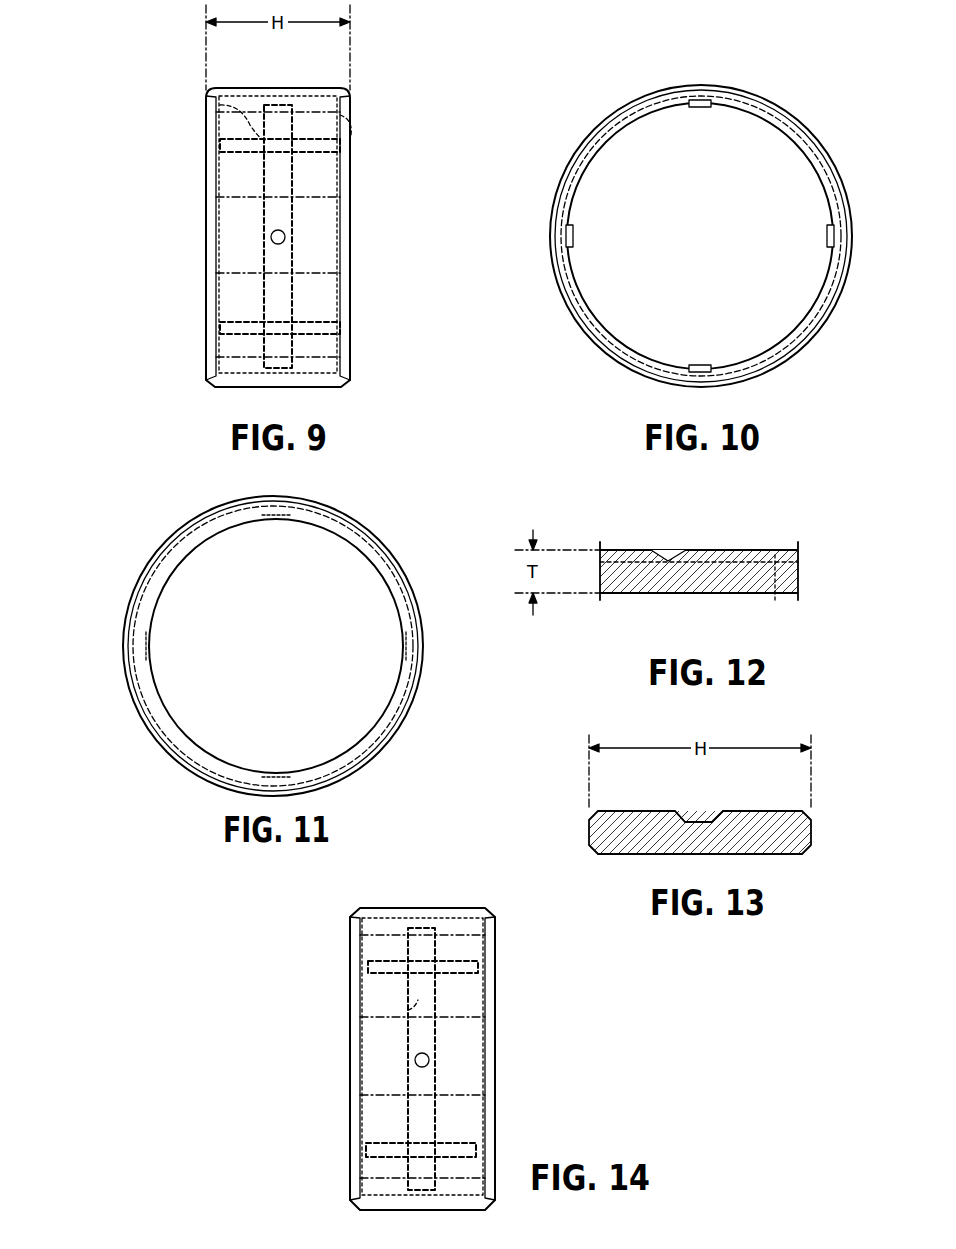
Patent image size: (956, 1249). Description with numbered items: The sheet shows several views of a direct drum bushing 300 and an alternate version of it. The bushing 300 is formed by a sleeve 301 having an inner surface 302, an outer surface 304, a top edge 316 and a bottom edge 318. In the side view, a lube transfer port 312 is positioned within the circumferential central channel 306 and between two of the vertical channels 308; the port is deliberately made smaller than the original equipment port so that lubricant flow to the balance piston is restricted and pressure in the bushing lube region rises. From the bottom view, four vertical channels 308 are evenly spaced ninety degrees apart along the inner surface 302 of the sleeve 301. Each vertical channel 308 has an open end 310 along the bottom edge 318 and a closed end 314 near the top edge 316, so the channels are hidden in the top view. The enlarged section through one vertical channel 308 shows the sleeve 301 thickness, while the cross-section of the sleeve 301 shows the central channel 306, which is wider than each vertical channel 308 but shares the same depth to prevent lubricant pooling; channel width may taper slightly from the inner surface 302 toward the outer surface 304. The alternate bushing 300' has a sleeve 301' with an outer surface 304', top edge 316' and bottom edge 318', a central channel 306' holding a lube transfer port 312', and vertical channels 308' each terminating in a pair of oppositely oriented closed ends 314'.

In FIG. 9, the bushing 300 is at (431, 115).
In FIG. 10, the bushing 300 is at (828, 79).
In FIG. 11, the bushing 300 is at (434, 519).
In FIG. 9, the sleeve 301 is at (278, 212).
In FIG. 10, the sleeve 301 is at (701, 243).
In FIG. 11, the sleeve 301 is at (245, 646).
In FIG. 12, the sleeve 301 is at (695, 589).
In FIG. 13, the sleeve 301 is at (693, 813).
In FIG. 10, the inner surface 302 is at (596, 160).
In FIG. 11, the inner surface 302 is at (182, 556).
In FIG. 12, the inner surface 302 is at (778, 550).
In FIG. 13, the inner surface 302 is at (622, 811).
In FIG. 9, the outer surface 304 is at (253, 234).
In FIG. 10, the outer surface 304 is at (720, 236).
In FIG. 11, the outer surface 304 is at (296, 646).
In FIG. 12, the outer surface 304 is at (691, 620).
In FIG. 13, the outer surface 304 is at (694, 872).
In FIG. 9, the central channel 306 is at (208, 121).
In FIG. 12, the central channel 306 is at (797, 586).
In FIG. 13, the central channel 306 is at (707, 793).
In FIG. 9, the vertical channel 308 is at (290, 202).
In FIG. 10, the vertical channel 308 is at (700, 211).
In FIG. 12, the vertical channel 308 is at (683, 529).
In FIG. 9, the open end 310 is at (350, 125).
In FIG. 9, the lube transfer port 312 is at (221, 243).
In FIG. 9, the closed end 314 is at (246, 151).
In FIG. 9, the top edge 316 is at (238, 322).
In FIG. 9, the bottom edge 318 is at (385, 275).
In FIG. 14, the bushing 300' is at (604, 987).
In FIG. 14, the sleeve 301' is at (450, 1059).
In FIG. 14, the outer surface 304' is at (422, 1023).
In FIG. 14, the central channel 306' is at (359, 996).
In FIG. 14, the vertical channel 308' is at (475, 1057).
In FIG. 14, the lube transfer port 312' is at (361, 1060).
In FIG. 14, the closed end 314' is at (423, 968).
In FIG. 14, the top edge 316' is at (369, 1142).
In FIG. 14, the bottom edge 318' is at (541, 1100).